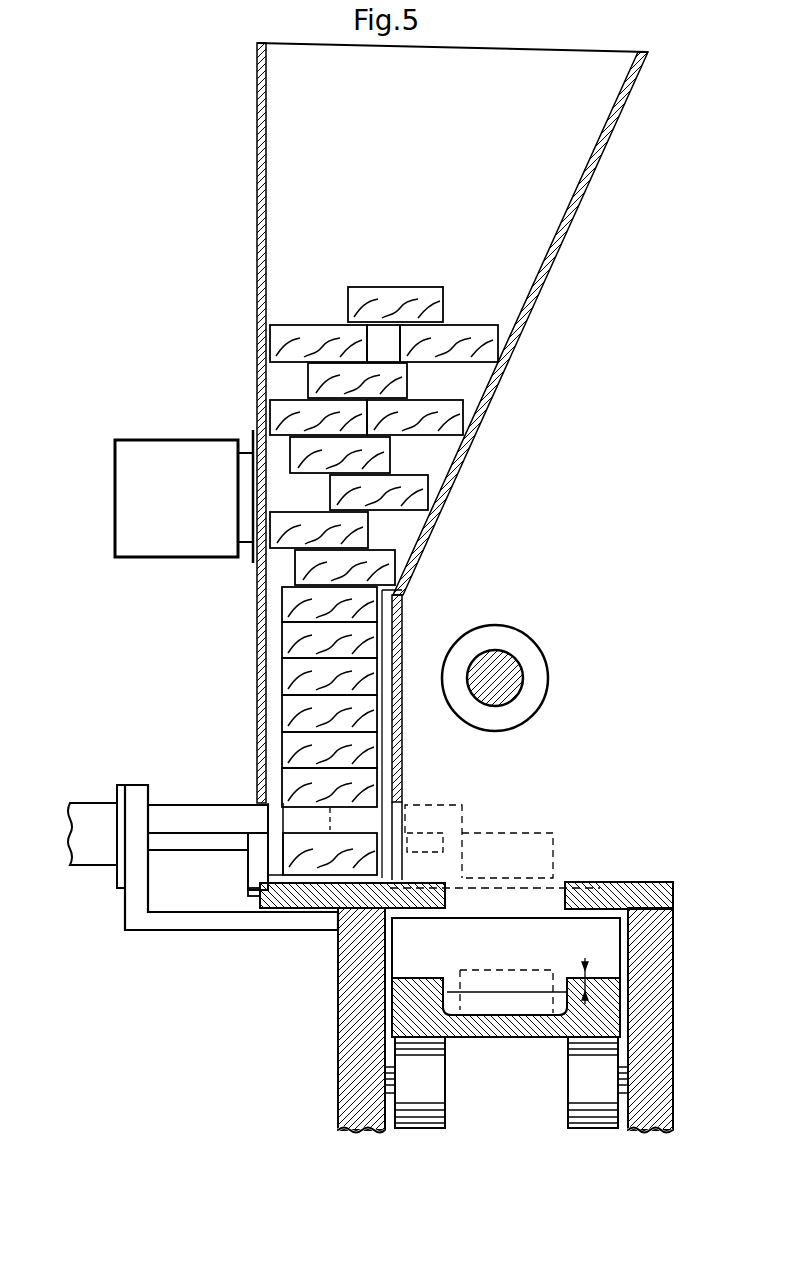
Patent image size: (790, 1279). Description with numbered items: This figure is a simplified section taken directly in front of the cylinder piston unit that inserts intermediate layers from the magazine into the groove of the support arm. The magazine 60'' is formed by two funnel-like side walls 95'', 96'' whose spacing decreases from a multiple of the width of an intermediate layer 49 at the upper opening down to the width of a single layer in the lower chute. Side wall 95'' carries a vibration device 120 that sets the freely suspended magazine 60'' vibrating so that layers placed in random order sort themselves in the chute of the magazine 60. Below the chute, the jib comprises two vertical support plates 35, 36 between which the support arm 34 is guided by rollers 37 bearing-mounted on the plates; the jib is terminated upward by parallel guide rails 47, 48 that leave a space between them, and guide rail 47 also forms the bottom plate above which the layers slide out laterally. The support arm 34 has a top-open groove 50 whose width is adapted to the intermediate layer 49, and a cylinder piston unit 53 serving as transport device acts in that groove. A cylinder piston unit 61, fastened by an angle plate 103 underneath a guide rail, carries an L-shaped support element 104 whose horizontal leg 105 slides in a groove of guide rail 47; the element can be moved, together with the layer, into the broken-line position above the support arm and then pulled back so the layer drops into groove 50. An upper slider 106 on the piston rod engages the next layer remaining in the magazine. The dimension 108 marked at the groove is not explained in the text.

The magazine 60'' is at (425, 423).
The side wall 95'' is at (234, 423).
The side wall 96'' is at (520, 323).
The magazine 60 is at (307, 735).
The vibration device 120 is at (190, 514).
The cylinder piston unit 53 is at (537, 668).
The intermediate layer 49 is at (290, 838).
The upper slider 106 is at (186, 813).
The support element 104 is at (247, 867).
The horizontal leg 105 is at (258, 892).
The cylinder piston unit 61 is at (96, 853).
The angle plate 103 is at (209, 922).
The guide rail 47 is at (310, 905).
The guide rail 48 is at (644, 882).
The support plate 35 is at (348, 1052).
The support plate 36 is at (660, 997).
The support arm 34 is at (545, 1032).
The groove 50 is at (520, 955).
The bottom plate level 108 is at (610, 975).
The roller 37 is at (432, 1078).